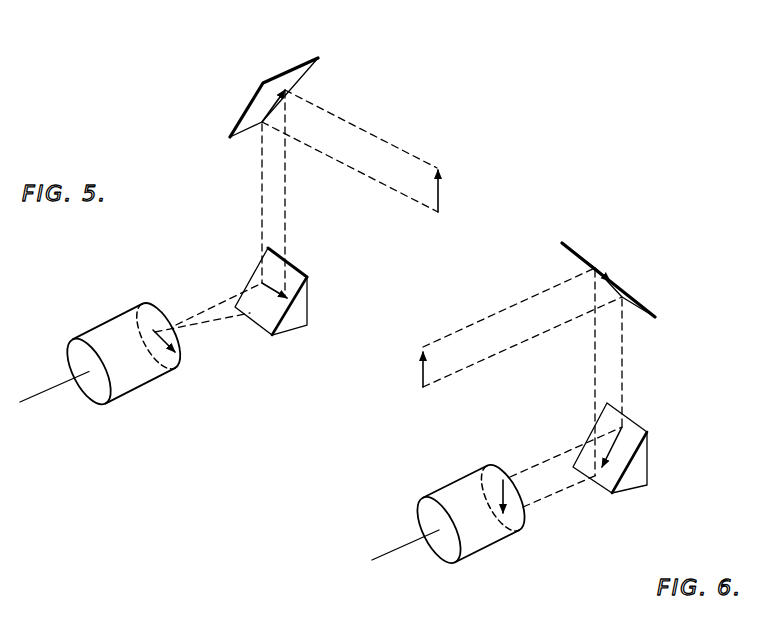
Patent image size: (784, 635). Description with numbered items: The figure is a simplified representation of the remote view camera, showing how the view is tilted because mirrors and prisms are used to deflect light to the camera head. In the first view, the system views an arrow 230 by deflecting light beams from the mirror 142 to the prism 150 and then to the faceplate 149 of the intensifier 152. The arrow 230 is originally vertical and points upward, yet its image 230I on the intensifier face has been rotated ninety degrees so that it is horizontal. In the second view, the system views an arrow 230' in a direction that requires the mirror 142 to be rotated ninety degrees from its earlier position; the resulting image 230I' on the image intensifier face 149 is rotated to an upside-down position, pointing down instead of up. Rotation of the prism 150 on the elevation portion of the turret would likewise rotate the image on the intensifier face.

In FIG. 5, the mirror 142 is at (320, 60).
In FIG. 6, the mirror 142 is at (618, 262).
In FIG. 5, the arrow 230 is at (471, 191).
In FIG. 5, the prism 150 is at (307, 295).
In FIG. 6, the prism 150 is at (648, 462).
In FIG. 5, the intensifier 152 is at (80, 337).
In FIG. 6, the intensifier 152 is at (433, 495).
In FIG. 5, the faceplate 149 is at (152, 312).
In FIG. 6, the faceplate 149 is at (490, 467).
In FIG. 5, the image 230I is at (152, 379).
In FIG. 6, the arrow 230' is at (391, 375).
In FIG. 6, the image 230I' is at (546, 511).